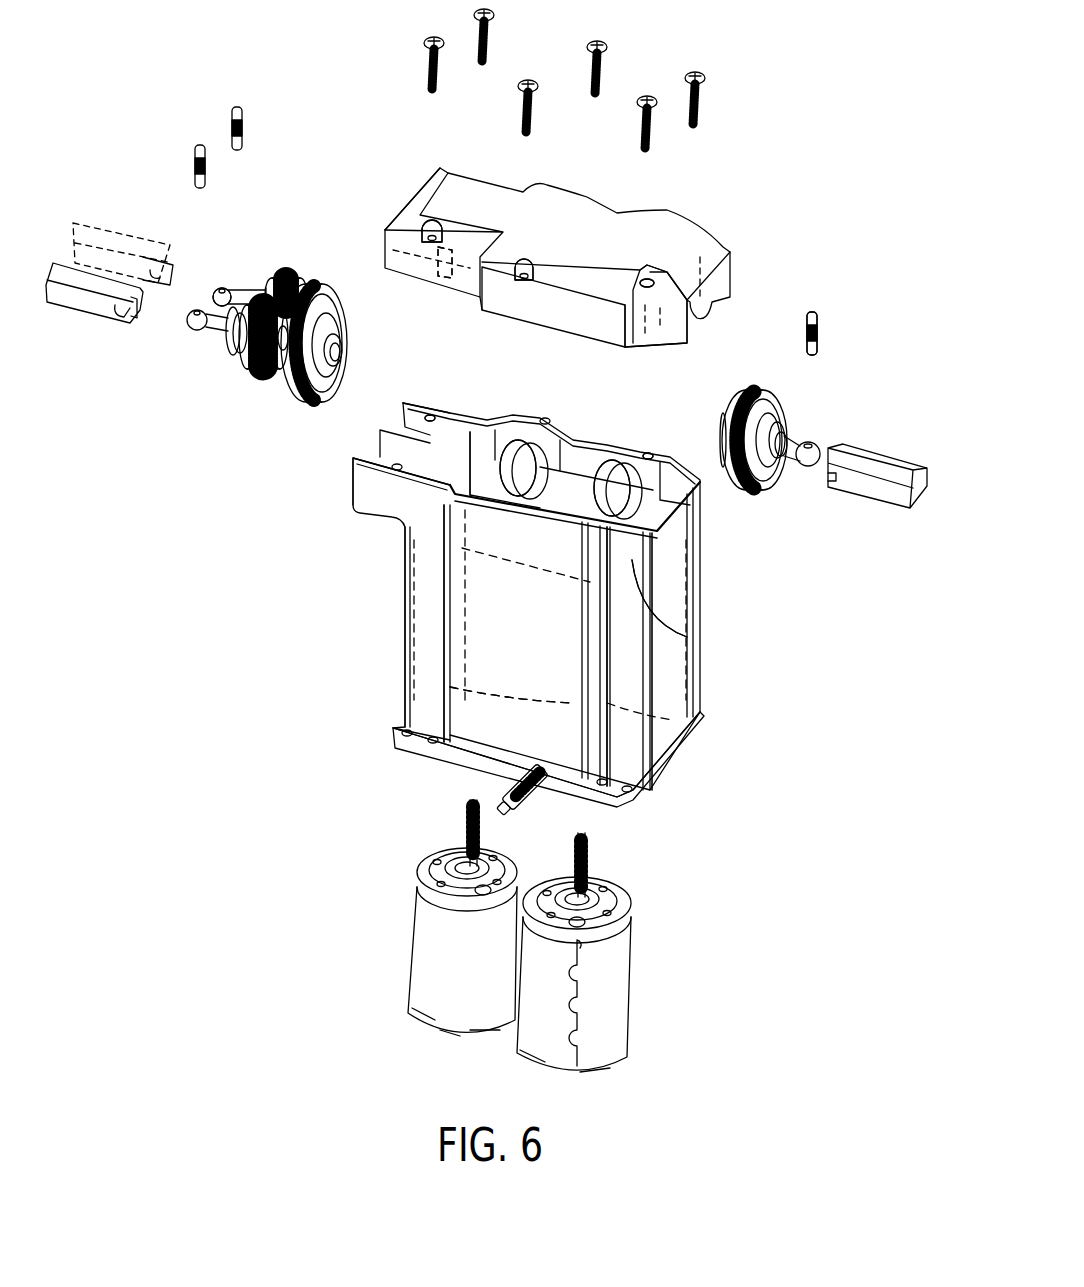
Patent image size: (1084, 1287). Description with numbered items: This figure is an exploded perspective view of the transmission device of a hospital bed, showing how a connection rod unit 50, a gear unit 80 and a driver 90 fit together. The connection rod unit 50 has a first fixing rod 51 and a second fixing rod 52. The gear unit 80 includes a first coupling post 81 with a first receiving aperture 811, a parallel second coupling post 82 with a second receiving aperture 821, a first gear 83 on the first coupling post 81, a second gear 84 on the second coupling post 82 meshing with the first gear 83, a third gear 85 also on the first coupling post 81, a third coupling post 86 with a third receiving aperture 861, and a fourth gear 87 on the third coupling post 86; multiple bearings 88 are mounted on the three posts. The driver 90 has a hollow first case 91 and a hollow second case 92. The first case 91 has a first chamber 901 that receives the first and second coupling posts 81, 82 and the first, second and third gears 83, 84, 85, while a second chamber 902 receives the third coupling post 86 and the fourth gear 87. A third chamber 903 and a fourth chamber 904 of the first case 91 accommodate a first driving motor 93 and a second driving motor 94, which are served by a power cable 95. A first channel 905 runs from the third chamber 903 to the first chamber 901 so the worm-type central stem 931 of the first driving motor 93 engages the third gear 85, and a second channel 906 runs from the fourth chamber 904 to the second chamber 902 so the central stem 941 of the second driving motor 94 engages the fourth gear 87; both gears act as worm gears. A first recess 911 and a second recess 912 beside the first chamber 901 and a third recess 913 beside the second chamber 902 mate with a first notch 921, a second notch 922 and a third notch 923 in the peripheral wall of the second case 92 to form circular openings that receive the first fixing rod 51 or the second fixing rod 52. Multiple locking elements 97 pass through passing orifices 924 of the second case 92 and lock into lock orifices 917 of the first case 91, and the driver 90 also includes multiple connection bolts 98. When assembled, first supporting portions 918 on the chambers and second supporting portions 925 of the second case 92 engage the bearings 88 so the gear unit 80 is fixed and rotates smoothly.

The connection rod unit 50 is at (487, 391).
The first fixing rod 51 is at (103, 218).
The second fixing rod 52 is at (878, 488).
The gear unit 80 is at (236, 291).
The first coupling post 81 is at (207, 333).
The first receiving aperture 811 is at (180, 308).
The second coupling post 82 is at (243, 287).
The second receiving aperture 821 is at (224, 288).
The first gear 83 is at (248, 377).
The second gear 84 is at (299, 276).
The third gear 85 is at (300, 402).
The third coupling post 86 is at (790, 465).
The third receiving aperture 861 is at (814, 445).
The fourth gear 87 is at (740, 497).
The bearings 88 is at (196, 148).
The driver 90 is at (295, 747).
The first case 91 is at (704, 694).
The first chamber 901 is at (442, 484).
The second chamber 902 is at (650, 600).
The third chamber 903 is at (405, 699).
The fourth chamber 904 is at (688, 764).
The first channel 905 is at (545, 437).
The second channel 906 is at (570, 445).
The first recess 911 is at (380, 430).
The second recess 912 is at (395, 425).
The third recess 913 is at (643, 532).
The lock orifices 917 is at (490, 437).
The first supporting portions 918 is at (428, 416).
The second case 92 is at (725, 224).
The first notch 921 is at (385, 212).
The second notch 922 is at (405, 205).
The third notch 923 is at (705, 333).
The passing orifices 924 is at (530, 258).
The second supporting portions 925 is at (462, 235).
The first driving motor 93 is at (421, 913).
The central stem 931 is at (466, 822).
The second driving motor 94 is at (635, 952).
The central stem 941 is at (592, 858).
The power cable 95 is at (516, 813).
The locking elements 97 is at (700, 93).
The connection bolts 98 is at (817, 313).